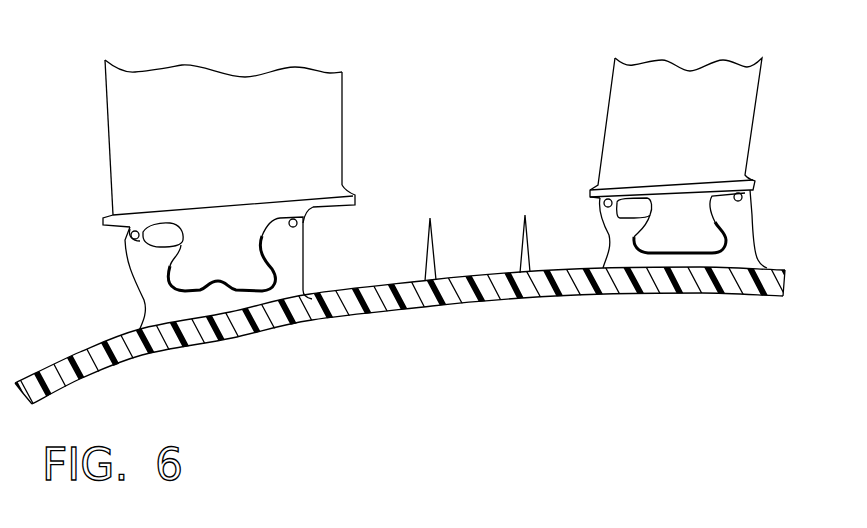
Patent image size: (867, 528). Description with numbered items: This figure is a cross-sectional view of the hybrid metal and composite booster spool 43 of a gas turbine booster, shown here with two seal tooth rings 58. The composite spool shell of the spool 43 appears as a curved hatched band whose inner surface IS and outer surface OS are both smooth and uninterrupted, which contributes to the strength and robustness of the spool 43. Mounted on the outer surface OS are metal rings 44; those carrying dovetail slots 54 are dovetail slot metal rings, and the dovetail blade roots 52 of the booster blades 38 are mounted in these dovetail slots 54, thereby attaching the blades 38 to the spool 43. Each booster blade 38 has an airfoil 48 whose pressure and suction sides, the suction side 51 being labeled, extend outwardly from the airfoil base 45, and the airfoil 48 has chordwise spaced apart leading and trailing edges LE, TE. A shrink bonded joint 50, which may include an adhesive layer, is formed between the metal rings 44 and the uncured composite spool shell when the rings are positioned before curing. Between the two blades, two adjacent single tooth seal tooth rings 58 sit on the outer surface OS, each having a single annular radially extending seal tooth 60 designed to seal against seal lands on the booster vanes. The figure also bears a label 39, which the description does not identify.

The booster blades 38 is at (230, 127).
The rotor blade assembly 39 is at (459, 169).
The booster spool 43 is at (407, 312).
The metal rings 44 is at (292, 262).
The airfoil base 45 is at (228, 206).
The airfoil 48 is at (343, 148).
The shrink bonded joint 50 is at (318, 288).
The suction side 51 is at (215, 97).
The dovetail blade roots 52 is at (207, 262).
The dovetail slots 54 is at (262, 296).
The seal tooth ring 58 is at (437, 305).
The seal tooth 60 is at (432, 228).
The leading edge LE is at (105, 128).
The trailing edge TE is at (379, 128).
The inner surface IS is at (112, 360).
The outer surface OS is at (548, 268).